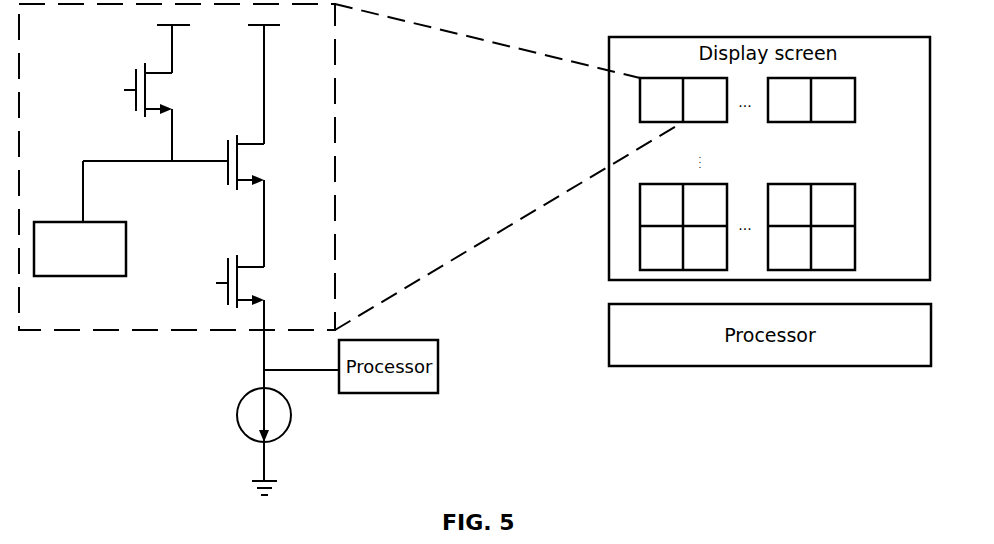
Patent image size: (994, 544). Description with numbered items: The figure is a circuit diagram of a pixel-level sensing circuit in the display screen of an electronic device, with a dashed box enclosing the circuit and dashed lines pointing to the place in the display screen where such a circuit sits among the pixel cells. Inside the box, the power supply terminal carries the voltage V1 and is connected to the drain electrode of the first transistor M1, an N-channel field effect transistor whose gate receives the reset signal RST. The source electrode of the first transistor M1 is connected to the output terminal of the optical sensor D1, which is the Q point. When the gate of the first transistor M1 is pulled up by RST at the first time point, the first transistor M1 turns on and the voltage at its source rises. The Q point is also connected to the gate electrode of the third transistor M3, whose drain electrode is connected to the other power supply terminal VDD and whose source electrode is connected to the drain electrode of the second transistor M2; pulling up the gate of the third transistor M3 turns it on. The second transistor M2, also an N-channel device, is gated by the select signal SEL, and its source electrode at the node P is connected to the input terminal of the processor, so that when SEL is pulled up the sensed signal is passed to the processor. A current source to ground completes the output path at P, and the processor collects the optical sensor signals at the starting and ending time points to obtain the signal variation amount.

The first transistor M1 is at (168, 112).
The second transistor M2 is at (268, 281).
The third transistor M3 is at (267, 201).
The optical sensor D1 is at (94, 249).
The Q point Q is at (155, 191).
The output node P is at (290, 390).
The voltage at the power supply terminal V1 is at (190, 45).
The supply voltage VDD is at (288, 80).
The reset signal RST is at (109, 90).
The select signal SEL is at (202, 284).